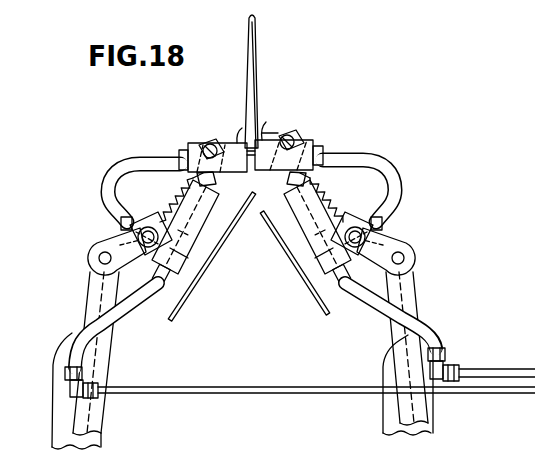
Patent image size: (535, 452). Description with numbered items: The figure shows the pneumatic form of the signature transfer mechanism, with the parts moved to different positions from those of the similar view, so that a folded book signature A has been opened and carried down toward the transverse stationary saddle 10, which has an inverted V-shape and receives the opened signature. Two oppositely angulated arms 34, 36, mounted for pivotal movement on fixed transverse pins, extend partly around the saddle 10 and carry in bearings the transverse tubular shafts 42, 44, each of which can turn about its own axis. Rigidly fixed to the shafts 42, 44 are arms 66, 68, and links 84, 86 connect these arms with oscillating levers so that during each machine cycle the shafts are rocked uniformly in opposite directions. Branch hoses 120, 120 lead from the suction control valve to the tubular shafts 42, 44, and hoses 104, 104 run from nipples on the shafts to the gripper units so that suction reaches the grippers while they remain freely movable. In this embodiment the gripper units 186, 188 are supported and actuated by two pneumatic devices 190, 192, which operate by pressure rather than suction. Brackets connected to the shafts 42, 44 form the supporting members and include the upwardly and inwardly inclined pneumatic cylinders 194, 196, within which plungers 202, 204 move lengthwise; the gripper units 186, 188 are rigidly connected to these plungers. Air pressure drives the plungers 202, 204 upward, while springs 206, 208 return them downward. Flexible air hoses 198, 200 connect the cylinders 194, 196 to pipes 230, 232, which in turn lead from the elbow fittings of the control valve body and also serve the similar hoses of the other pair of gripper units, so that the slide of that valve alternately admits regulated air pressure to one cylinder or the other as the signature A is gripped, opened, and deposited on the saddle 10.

The saddle 10 is at (273, 233).
The arm 34 is at (118, 337).
The arm 36 is at (380, 337).
The tubular shaft 42 is at (152, 222).
The tubular shaft 44 is at (357, 224).
The arm 66 is at (120, 237).
The arm 68 is at (382, 243).
The link 84 is at (93, 292).
The link 86 is at (410, 280).
The hose 104 is at (115, 173).
The branch hose 120 is at (167, 235).
The gripper unit 186 is at (231, 140).
The gripper unit 188 is at (278, 140).
The pneumatic device 190 is at (198, 210).
The pneumatic device 192 is at (306, 220).
The pneumatic cylinder 194 is at (177, 253).
The pneumatic cylinder 196 is at (337, 259).
The flexible air hose 198 is at (142, 308).
The flexible air hose 200 is at (368, 307).
The plunger 202 is at (206, 181).
The plunger 204 is at (296, 178).
The spring 206 is at (166, 210).
The spring 208 is at (344, 212).
The pipe 230 is at (173, 390).
The pipe 232 is at (493, 370).
The book signature A is at (248, 62).